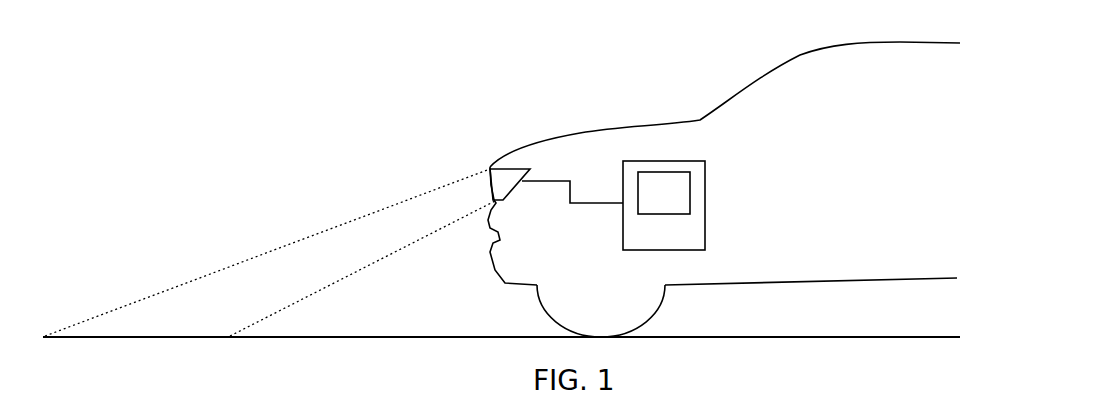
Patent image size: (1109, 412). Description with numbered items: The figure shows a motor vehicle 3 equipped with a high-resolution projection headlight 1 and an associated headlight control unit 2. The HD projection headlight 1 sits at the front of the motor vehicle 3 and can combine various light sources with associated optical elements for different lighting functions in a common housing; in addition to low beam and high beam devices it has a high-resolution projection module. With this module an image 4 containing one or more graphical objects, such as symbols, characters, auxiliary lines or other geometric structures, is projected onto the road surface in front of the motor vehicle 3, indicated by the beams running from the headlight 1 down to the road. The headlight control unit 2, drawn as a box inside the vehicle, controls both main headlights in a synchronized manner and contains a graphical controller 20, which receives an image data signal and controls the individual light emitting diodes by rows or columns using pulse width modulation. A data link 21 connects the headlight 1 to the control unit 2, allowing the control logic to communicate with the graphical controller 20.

The HD projection headlight 1 is at (486, 185).
The headlight control unit 2 is at (721, 199).
The graphical controller 20 is at (664, 193).
The data link 21 is at (538, 184).
The motor vehicle 3 is at (711, 74).
The image 4 is at (167, 329).